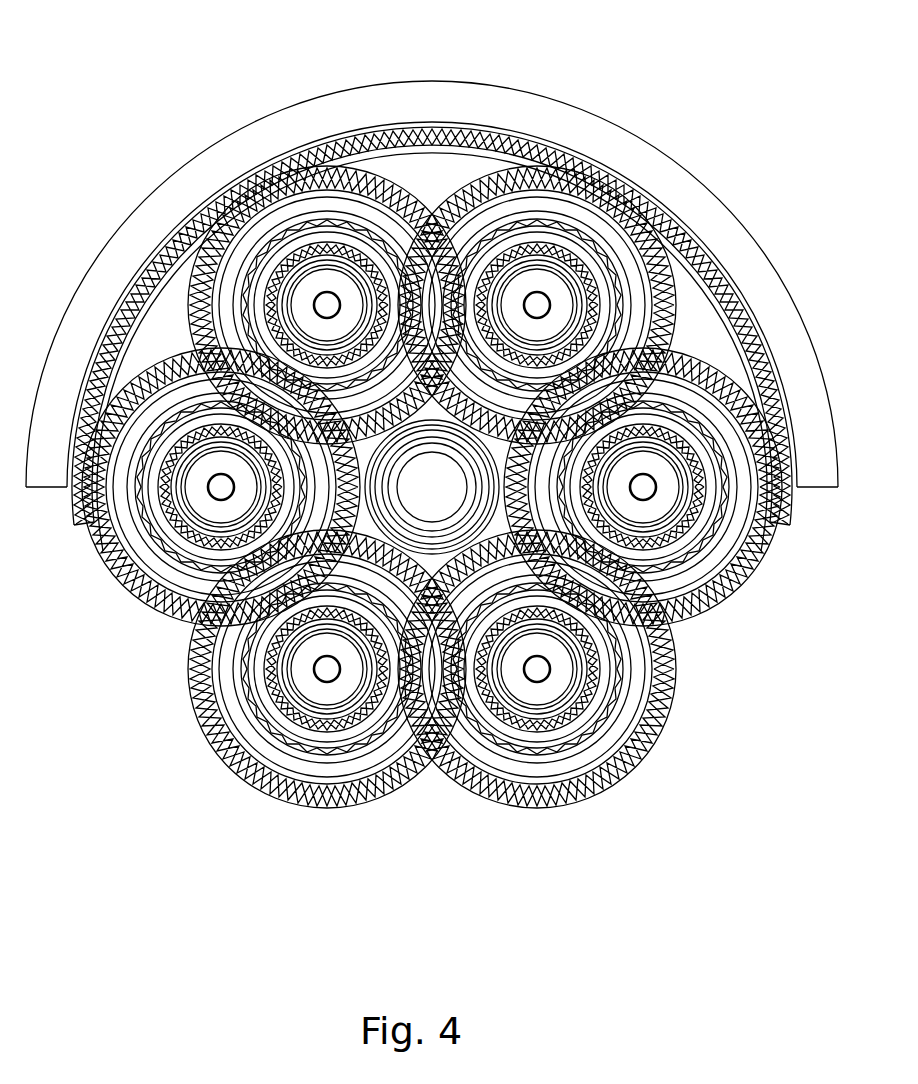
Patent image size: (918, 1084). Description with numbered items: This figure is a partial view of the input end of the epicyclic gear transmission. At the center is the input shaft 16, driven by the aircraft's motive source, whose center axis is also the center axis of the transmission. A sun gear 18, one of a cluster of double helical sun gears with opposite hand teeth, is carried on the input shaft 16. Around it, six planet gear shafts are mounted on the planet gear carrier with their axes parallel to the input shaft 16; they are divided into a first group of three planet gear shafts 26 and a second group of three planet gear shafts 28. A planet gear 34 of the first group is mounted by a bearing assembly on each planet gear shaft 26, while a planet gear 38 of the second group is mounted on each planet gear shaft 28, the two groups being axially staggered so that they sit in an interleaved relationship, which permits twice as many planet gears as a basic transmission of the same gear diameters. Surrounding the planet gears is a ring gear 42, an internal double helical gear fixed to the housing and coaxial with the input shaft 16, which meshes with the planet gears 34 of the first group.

The input shaft 16 is at (713, 598).
The sun gear 18 is at (500, 492).
The planet gear shaft 26 is at (520, 257).
The planet gear shaft 28 is at (323, 253).
The planet gear 34 is at (600, 220).
The planet gear 38 is at (260, 227).
The ring gear 42 is at (148, 320).